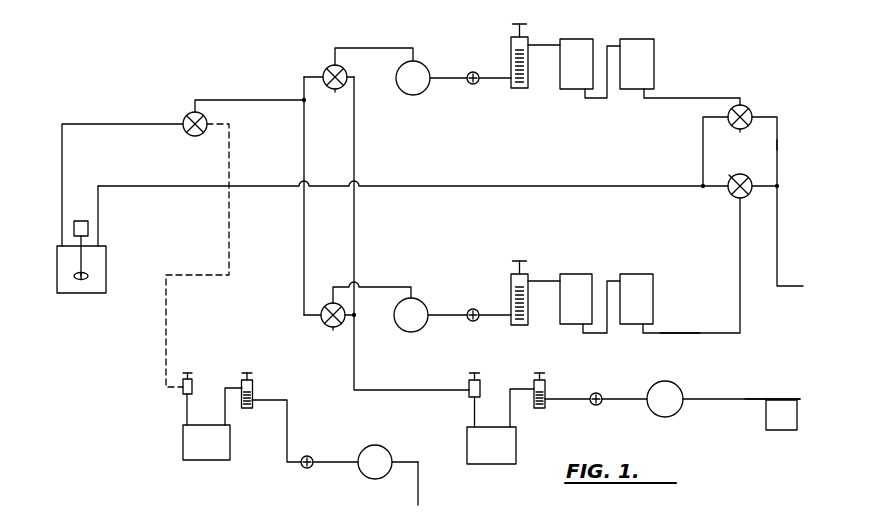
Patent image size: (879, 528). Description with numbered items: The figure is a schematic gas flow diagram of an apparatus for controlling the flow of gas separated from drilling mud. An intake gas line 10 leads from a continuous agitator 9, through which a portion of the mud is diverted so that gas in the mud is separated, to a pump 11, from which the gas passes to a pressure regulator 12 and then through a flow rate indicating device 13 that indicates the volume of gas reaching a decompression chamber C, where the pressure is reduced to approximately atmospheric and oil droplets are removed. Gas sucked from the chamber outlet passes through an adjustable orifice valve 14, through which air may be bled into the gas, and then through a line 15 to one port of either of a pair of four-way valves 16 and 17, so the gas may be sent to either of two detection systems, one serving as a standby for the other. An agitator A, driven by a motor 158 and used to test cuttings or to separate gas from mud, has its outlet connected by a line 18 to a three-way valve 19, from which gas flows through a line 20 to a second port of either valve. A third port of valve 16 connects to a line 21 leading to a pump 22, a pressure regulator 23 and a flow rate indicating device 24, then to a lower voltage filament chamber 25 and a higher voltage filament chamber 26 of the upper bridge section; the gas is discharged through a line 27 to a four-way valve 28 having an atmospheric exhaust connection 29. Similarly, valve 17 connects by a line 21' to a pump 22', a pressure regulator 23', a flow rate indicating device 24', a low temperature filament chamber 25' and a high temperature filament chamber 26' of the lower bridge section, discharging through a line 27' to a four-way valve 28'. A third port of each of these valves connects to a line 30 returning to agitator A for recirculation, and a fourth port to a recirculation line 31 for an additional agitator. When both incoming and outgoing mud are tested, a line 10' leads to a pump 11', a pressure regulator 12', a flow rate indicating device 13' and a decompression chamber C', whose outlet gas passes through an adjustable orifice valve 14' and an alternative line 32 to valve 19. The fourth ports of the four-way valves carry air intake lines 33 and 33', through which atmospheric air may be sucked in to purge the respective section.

The continuous agitator 9 is at (766, 422).
The intake gas line 10 is at (772, 386).
The pump 11 is at (718, 408).
The pressure regulator 12 is at (613, 412).
The flow rate indicating device 13 is at (560, 402).
The adjustable orifice valve 14 is at (456, 395).
The line 15 is at (360, 131).
The four-way valve 16 is at (323, 70).
The four-way valve 17 is at (320, 320).
The line 18 is at (62, 196).
The three-way valve 19 is at (206, 120).
The line 20 is at (243, 100).
The line 21 is at (374, 41).
The pump 22 is at (431, 64).
The pressure regulator 23 is at (479, 92).
The flow rate indicating device 24 is at (535, 71).
The lower voltage filament chamber 25 is at (588, 53).
The higher voltage filament chamber 26 is at (636, 49).
The line 27 is at (692, 88).
The four-way valve 28 is at (753, 186).
The atmospheric exhaust connection 29 is at (738, 128).
The line 30 is at (606, 186).
The recirculation line 31 is at (778, 145).
The alternative line 32 is at (229, 226).
The air intake line 33 is at (325, 106).
The motor 158 is at (88, 226).
The agitator A is at (104, 282).
The decompression chamber C is at (508, 427).
The decompression chamber C' is at (194, 433).
The line 10' is at (396, 486).
The pump 11' is at (395, 456).
The pressure regulator 12' is at (315, 475).
The flow rate indicating device 13' is at (272, 409).
The adjustable orifice valve 14' is at (199, 384).
The line 21' is at (372, 278).
The pump 22' is at (430, 300).
The pressure regulator 23' is at (478, 328).
The flow rate indicating device 24' is at (534, 308).
The low temperature filament chamber 25' is at (585, 289).
The high temperature filament chamber 26' is at (659, 294).
The line 27' is at (687, 347).
The four-way valve 28' is at (710, 253).
The air intake line 33' is at (326, 347).